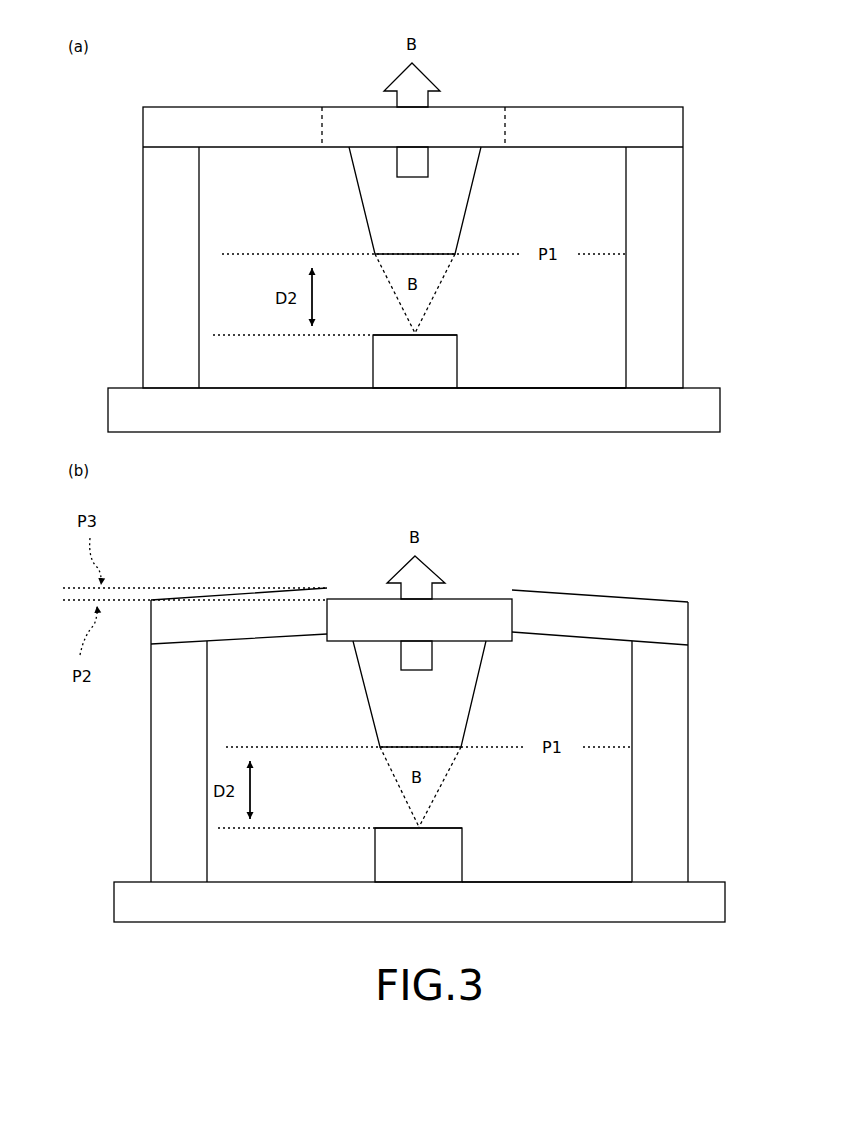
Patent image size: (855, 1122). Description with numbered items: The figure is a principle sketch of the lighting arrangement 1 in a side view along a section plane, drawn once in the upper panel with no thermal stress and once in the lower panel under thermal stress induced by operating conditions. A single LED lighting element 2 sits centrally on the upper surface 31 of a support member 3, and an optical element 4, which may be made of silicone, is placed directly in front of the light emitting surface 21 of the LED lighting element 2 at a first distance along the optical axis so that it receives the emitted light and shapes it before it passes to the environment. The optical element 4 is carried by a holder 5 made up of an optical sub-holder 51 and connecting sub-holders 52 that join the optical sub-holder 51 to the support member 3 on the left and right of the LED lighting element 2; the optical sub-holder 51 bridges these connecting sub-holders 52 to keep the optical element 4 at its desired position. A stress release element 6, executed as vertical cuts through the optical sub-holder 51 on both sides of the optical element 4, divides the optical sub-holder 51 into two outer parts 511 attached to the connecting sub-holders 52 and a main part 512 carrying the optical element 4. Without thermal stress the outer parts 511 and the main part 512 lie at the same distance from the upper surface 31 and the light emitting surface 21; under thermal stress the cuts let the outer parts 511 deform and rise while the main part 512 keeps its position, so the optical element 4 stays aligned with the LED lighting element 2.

The lighting arrangement 1 is at (240, 85).
The LED lighting element 2 is at (420, 371).
The light emitting surface 21 is at (443, 332).
The support member 3 is at (302, 419).
The upper surface 31 is at (560, 382).
The optical element 4 is at (420, 219).
The holder 5 is at (727, 93).
The optical sub-holder 51 is at (143, 127).
The outer parts 511 is at (237, 135).
The main part 512 is at (469, 135).
The connecting sub-holder 52 is at (181, 214).
The stress release element 6 is at (322, 104).